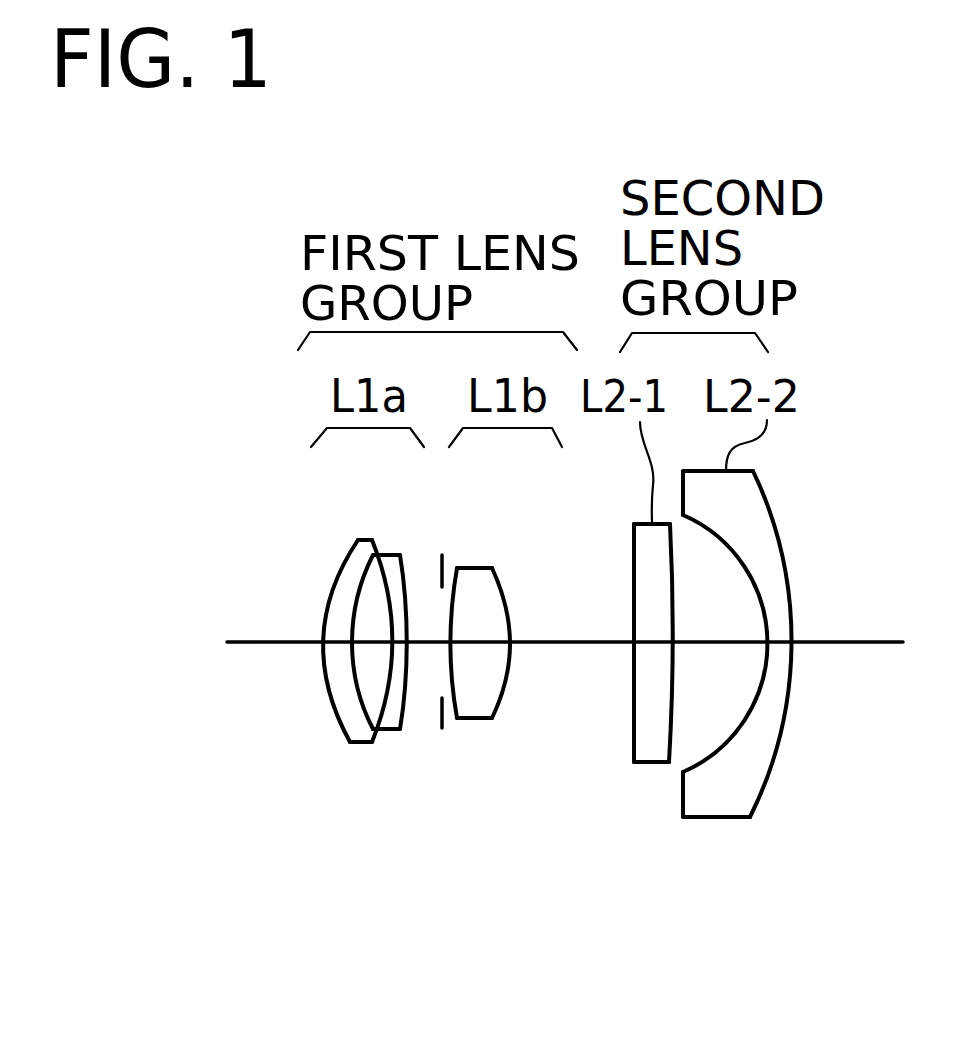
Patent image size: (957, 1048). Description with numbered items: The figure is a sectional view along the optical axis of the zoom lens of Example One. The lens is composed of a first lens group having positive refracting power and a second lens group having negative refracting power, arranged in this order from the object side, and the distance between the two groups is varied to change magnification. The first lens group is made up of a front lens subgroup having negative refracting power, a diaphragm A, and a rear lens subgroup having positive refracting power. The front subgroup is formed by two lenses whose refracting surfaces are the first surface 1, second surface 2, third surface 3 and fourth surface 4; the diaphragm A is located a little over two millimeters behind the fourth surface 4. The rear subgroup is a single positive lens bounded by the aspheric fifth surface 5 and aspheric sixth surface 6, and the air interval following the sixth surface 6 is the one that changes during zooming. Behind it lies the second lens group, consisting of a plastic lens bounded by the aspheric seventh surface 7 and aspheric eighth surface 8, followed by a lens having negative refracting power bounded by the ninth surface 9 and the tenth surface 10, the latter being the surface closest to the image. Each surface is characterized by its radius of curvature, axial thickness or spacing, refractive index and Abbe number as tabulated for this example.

The first surface 1 is at (325, 667).
The second surface 2 is at (355, 688).
The third surface 3 is at (383, 697).
The fourth surface 4 is at (405, 712).
The fifth surface 5 is at (452, 682).
The sixth surface 6 is at (497, 702).
The seventh surface 7 is at (633, 720).
The eighth surface 8 is at (667, 733).
The ninth surface 9 is at (710, 758).
The tenth surface 10 is at (770, 777).
The diaphragm A is at (442, 557).